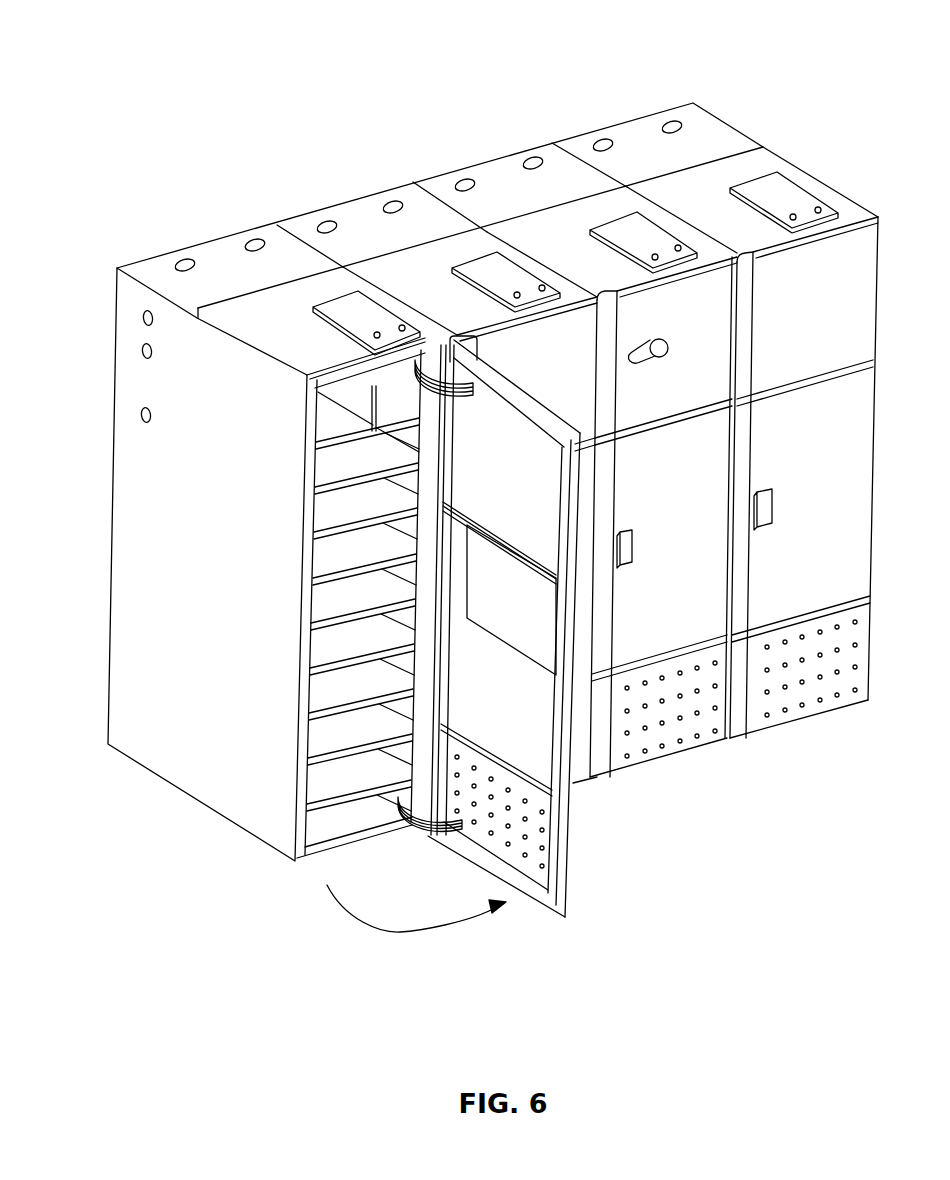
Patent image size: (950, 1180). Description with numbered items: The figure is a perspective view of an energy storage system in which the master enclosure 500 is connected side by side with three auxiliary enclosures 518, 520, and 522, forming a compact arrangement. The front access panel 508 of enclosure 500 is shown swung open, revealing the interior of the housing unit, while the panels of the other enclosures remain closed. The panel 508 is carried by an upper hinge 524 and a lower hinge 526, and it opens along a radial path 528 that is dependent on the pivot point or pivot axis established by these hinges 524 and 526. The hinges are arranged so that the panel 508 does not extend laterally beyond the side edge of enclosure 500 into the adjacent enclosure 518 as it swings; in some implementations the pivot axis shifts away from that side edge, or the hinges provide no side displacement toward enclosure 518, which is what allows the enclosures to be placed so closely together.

The enclosure 500 is at (208, 623).
The enclosure 518 is at (398, 286).
The enclosure 520 is at (538, 237).
The enclosure 522 is at (665, 200).
The hinge 524 is at (453, 330).
The hinge 526 is at (398, 836).
The front access panel 508 is at (523, 748).
The radial path 528 is at (393, 932).